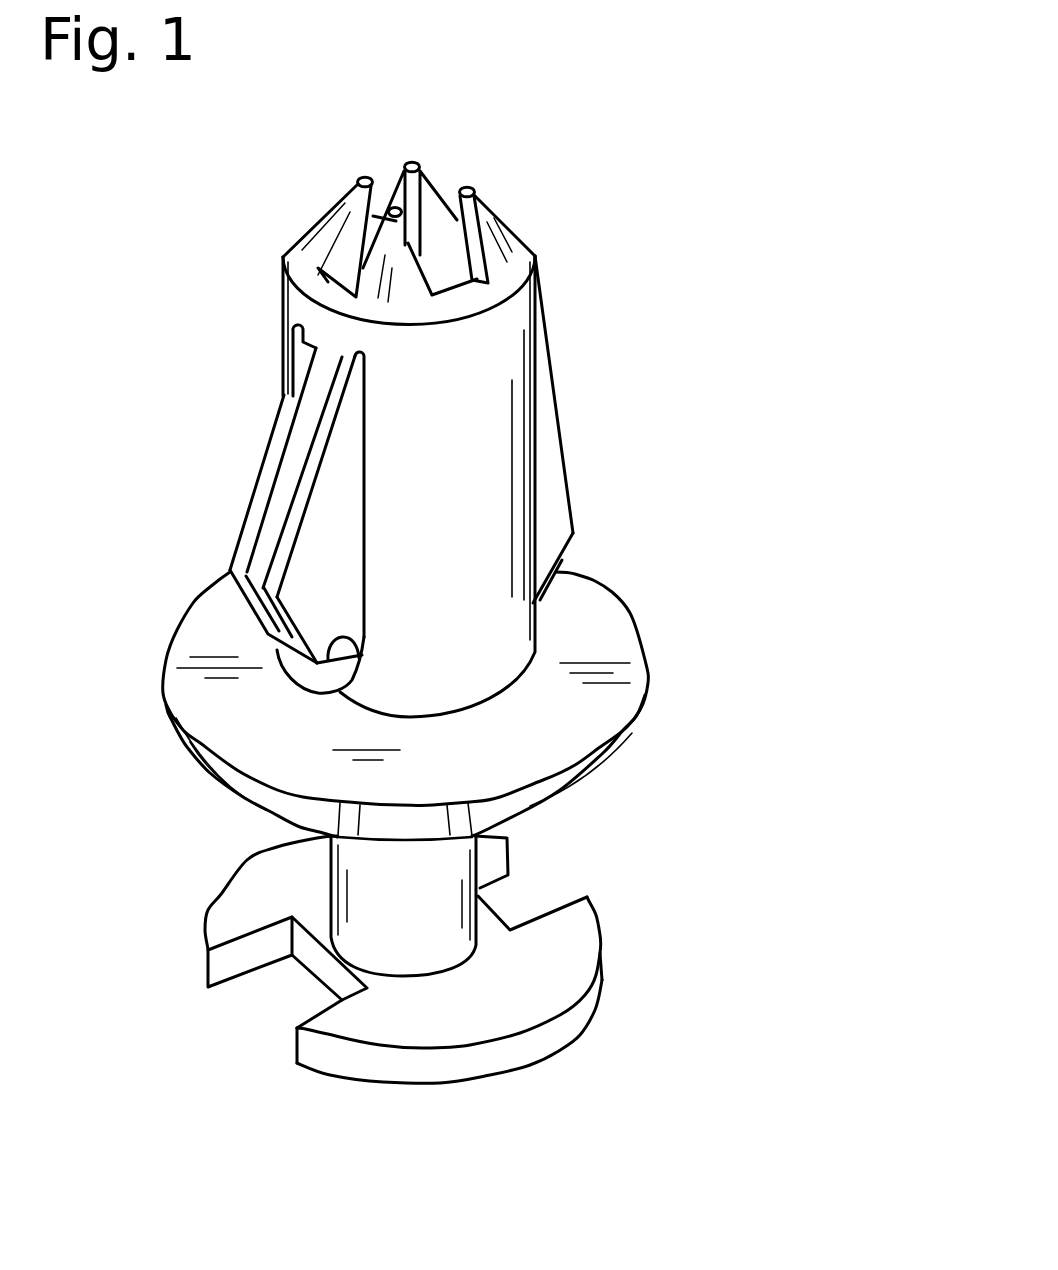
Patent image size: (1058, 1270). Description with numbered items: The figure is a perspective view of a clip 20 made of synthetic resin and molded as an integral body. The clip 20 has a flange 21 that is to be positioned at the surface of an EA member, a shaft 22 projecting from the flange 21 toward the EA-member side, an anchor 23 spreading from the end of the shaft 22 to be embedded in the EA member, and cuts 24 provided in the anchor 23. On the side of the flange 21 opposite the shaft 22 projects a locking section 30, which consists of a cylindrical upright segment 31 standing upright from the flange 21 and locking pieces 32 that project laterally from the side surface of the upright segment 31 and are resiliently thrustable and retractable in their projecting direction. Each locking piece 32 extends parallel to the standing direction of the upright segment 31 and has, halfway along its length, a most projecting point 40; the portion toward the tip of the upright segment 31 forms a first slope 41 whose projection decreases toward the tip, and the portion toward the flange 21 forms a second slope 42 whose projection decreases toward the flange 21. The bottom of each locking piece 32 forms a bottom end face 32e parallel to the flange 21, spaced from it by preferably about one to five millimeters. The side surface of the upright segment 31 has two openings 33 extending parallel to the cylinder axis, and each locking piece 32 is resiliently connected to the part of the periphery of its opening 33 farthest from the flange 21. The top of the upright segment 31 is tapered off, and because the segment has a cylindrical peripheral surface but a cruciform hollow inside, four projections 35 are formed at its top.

The clip 20 is at (802, 236).
The flange 21 is at (617, 625).
The shaft 22 is at (357, 878).
The anchor 23 is at (540, 988).
The cuts 24 is at (560, 900).
The locking section 30 is at (596, 358).
The cylindrical upright segment 31 is at (517, 313).
The locking piece 32 is at (310, 583).
The bottom end face 32e is at (333, 637).
The openings 33 is at (350, 517).
The projections 35 is at (352, 188).
The most projecting point 40 is at (230, 570).
The first slope 41 is at (270, 462).
The second slope 42 is at (258, 623).